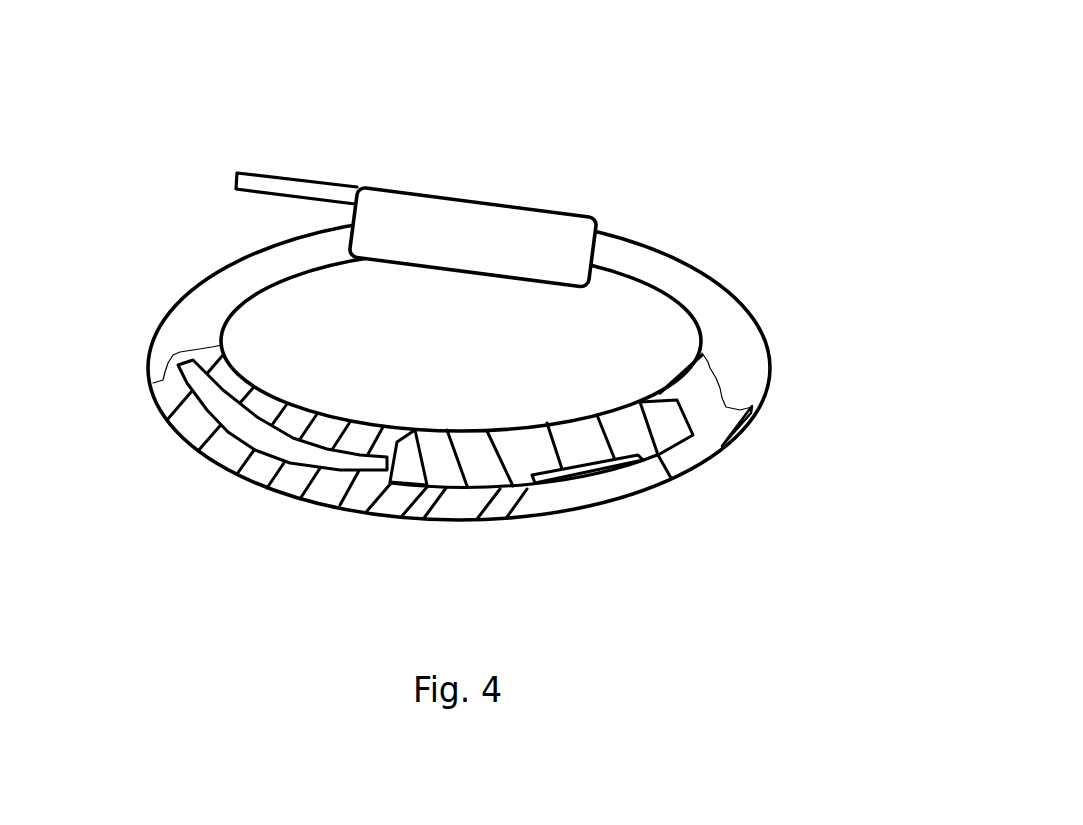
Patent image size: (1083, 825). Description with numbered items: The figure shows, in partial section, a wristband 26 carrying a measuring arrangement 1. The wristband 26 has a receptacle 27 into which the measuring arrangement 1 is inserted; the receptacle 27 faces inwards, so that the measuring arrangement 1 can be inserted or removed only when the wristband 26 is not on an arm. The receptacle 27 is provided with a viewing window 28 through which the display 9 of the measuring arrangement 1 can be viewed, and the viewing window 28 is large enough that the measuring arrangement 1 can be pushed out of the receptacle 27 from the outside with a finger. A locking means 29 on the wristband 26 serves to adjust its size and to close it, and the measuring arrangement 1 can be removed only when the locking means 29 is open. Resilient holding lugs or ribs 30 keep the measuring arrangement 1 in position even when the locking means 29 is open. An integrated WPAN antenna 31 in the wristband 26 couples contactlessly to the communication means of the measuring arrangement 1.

The measuring arrangement 1 is at (480, 463).
The display 9 is at (577, 477).
The wristband 26 is at (706, 183).
The receptacle 27 is at (413, 514).
The viewing window 28 is at (630, 485).
The locking means 29 is at (465, 227).
The resilient holding lugs or ribs 30 is at (400, 430).
The integrated WPAN antenna 31 is at (237, 432).